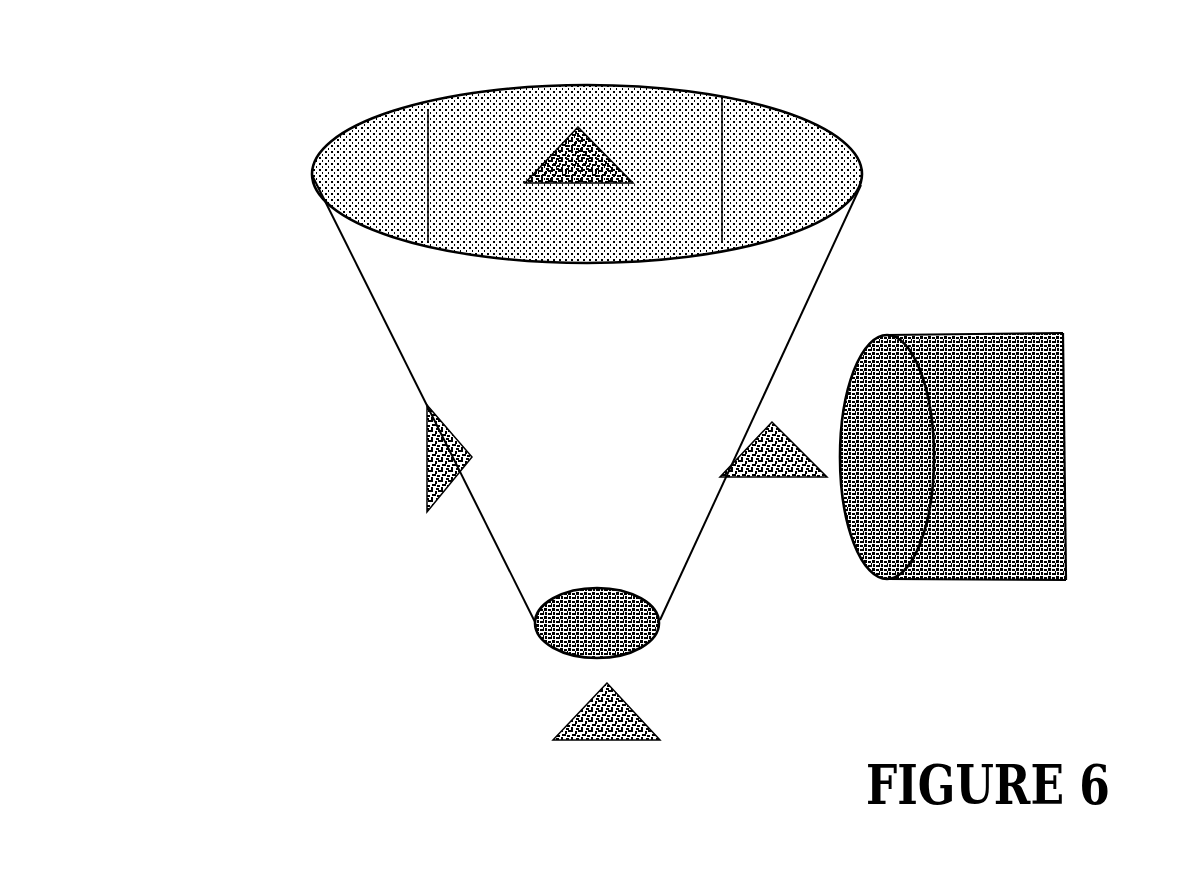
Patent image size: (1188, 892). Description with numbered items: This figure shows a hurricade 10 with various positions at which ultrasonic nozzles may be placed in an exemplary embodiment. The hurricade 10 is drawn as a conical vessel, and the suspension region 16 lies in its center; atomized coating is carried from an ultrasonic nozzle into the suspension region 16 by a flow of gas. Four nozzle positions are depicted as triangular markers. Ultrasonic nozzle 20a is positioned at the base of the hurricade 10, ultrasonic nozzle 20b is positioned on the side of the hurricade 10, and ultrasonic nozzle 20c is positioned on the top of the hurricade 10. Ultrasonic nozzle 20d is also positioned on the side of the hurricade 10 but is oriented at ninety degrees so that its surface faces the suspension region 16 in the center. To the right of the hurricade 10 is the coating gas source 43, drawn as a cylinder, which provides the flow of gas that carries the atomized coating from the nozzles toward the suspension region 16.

The hurricade 10 is at (386, 325).
The suspension region 16 is at (606, 376).
The ultrasonic nozzle 20a is at (634, 729).
The ultrasonic nozzle 20b is at (801, 464).
The ultrasonic nozzle 20c is at (604, 171).
The ultrasonic nozzle 20d is at (481, 474).
The coating gas source 43 is at (998, 472).